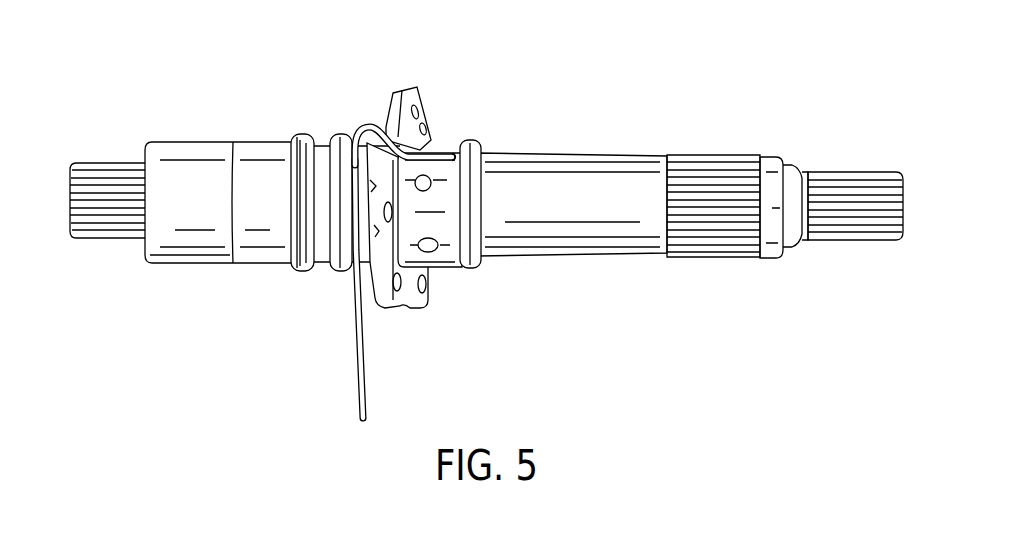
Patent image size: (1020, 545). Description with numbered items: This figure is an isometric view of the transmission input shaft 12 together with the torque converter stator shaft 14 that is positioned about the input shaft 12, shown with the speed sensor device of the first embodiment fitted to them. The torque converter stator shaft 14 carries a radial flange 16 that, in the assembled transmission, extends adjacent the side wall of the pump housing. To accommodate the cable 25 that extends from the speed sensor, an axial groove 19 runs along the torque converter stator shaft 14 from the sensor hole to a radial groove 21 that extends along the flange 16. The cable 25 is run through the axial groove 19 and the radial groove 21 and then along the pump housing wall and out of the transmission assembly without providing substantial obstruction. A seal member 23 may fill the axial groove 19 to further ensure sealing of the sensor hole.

The input shaft 12 is at (605, 168).
The torque converter stator shaft 14 is at (298, 278).
The radial flange 16 is at (420, 302).
The axial groove 19 is at (419, 147).
The radial groove 21 is at (397, 140).
The seal member 23 is at (430, 143).
The cable 25 is at (363, 385).